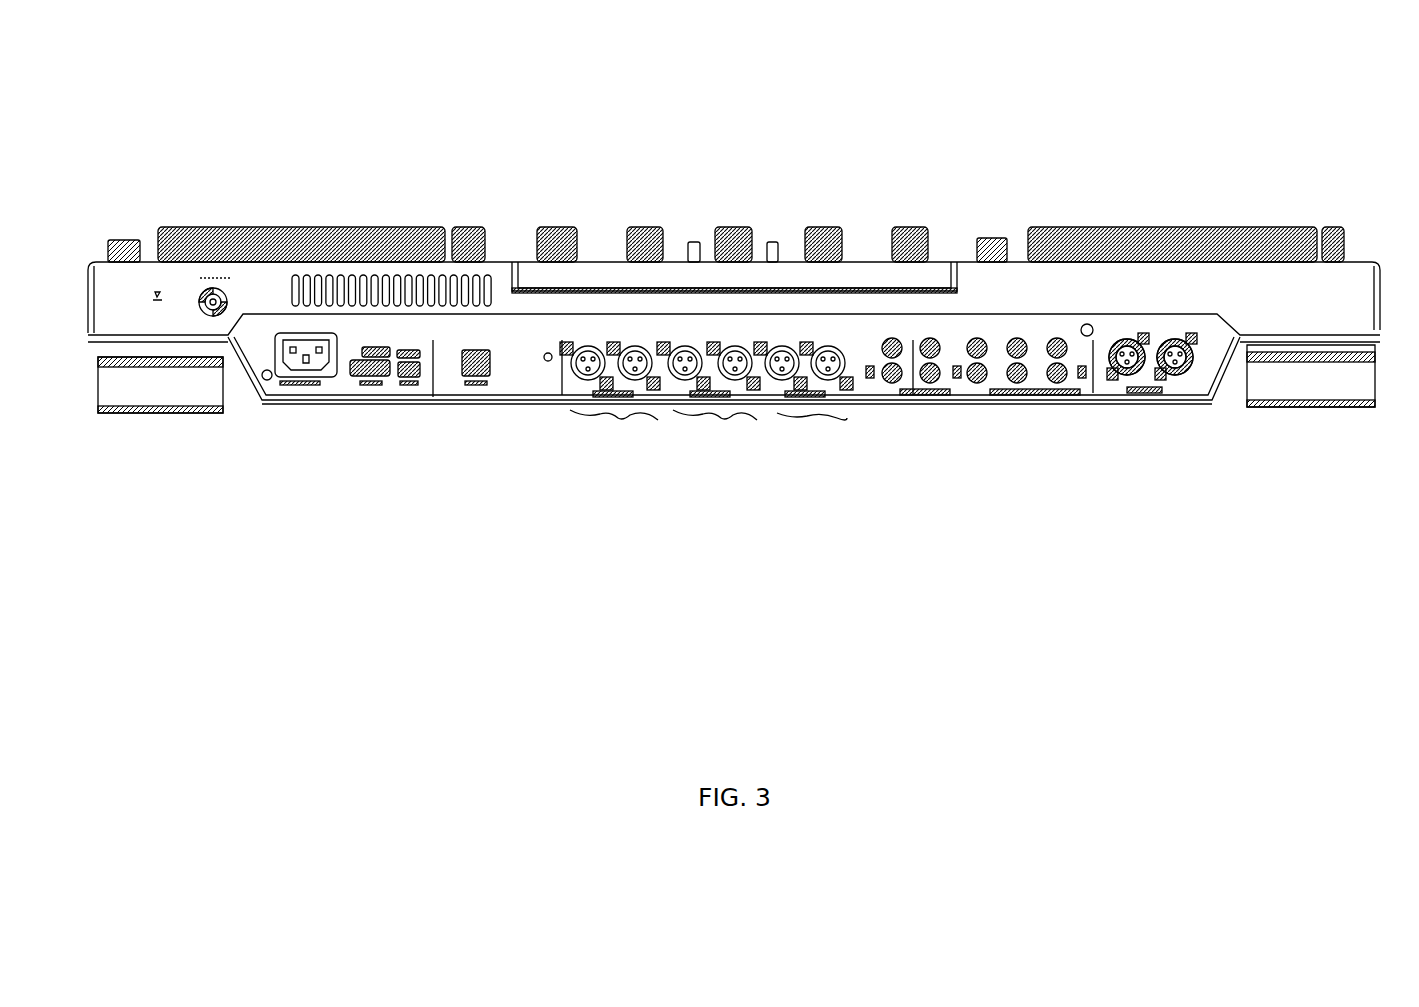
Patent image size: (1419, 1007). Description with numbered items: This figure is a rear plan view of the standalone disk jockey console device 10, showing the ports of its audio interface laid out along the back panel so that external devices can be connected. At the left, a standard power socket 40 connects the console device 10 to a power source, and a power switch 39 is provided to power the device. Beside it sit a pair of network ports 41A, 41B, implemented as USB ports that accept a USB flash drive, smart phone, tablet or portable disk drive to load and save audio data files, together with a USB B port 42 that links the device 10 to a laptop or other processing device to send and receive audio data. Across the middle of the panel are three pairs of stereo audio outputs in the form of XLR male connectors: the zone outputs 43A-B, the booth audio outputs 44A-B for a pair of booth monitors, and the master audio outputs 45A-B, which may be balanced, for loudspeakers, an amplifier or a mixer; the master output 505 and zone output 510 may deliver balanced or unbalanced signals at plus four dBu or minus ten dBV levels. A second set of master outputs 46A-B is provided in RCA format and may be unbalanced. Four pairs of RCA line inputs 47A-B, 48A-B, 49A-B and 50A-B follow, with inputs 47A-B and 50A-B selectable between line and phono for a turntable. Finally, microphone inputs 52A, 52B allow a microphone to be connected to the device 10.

The console device 10 is at (1005, 88).
The power switch 39 is at (225, 286).
The power socket 40 is at (274, 405).
The network port 41A is at (343, 405).
The network port 41B is at (397, 404).
The USB B port 42 is at (442, 403).
The XLR input connectors 43A-B is at (616, 420).
The booth audio outputs 44A-B is at (715, 422).
The master audio outputs 45A-B is at (820, 423).
The second set of master outputs 46A-B is at (898, 405).
The line inputs 47A-B is at (980, 403).
The line inputs 48A-B is at (1033, 403).
The line inputs 49A-B is at (1057, 403).
The line inputs 50A-B is at (1093, 403).
The microphone input 52A is at (1165, 405).
The microphone input 52B is at (1213, 405).
The master output 505 is at (830, 433).
The zone output 510 is at (638, 428).